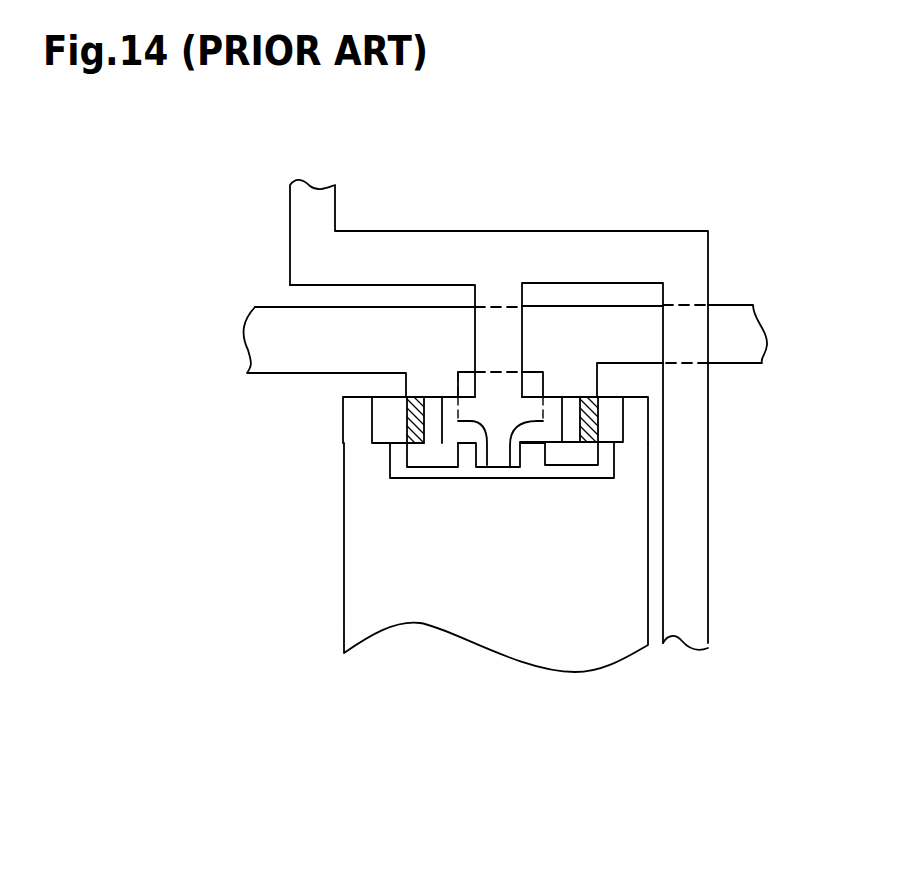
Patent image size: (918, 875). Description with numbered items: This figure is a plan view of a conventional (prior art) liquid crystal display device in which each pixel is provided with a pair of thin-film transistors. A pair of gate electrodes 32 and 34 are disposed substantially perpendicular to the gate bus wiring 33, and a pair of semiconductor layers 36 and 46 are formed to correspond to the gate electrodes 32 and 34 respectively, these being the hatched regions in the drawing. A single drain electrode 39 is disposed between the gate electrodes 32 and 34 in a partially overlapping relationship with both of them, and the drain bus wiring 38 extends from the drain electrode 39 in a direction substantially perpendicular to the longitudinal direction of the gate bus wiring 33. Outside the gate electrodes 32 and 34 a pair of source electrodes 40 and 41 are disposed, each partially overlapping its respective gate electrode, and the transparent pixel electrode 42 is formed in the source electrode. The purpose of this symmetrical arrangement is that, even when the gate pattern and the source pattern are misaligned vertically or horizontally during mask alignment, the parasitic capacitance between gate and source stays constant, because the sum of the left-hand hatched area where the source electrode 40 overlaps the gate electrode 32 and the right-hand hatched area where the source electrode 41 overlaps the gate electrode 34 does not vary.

The gate electrode 32 is at (417, 456).
The gate bus wiring 33 is at (297, 352).
The gate electrode 34 is at (573, 453).
The semiconductor layer 36 is at (435, 410).
The drain bus wiring 38 is at (567, 242).
The drain electrode 39 is at (487, 465).
The source electrode 40 is at (382, 418).
The source electrode 41 is at (613, 418).
The transparent pixel electrode 42 is at (372, 585).
The semiconductor layer 46 is at (572, 408).